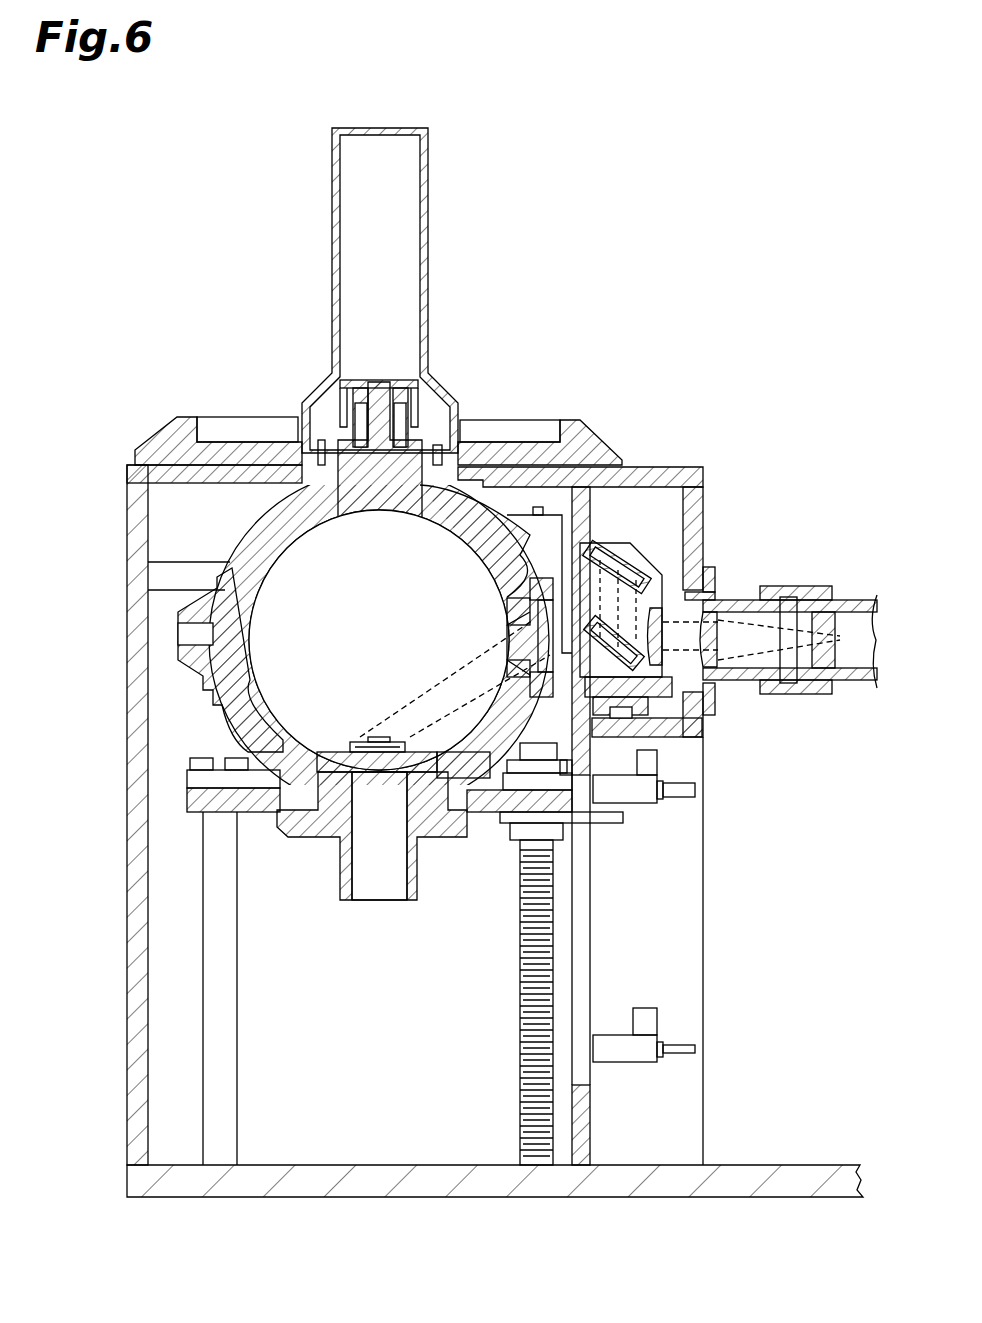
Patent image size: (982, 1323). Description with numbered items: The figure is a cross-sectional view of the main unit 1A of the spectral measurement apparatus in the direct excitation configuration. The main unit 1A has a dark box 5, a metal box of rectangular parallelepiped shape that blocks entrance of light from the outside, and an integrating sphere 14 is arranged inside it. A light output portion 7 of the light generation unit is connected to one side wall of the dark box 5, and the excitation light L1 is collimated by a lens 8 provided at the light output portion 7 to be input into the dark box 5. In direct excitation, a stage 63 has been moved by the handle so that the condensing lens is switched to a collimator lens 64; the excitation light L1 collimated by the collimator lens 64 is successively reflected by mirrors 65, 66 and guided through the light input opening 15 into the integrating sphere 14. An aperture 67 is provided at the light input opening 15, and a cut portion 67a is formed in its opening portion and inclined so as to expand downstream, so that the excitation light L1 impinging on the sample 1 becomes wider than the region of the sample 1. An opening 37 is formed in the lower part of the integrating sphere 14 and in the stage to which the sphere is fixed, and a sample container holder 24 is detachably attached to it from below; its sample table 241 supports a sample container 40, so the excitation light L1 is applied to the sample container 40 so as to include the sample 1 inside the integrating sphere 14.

The main unit 1A is at (810, 131).
The dark box 5 is at (125, 940).
The integrating sphere 14 is at (247, 553).
The light input opening 15 is at (503, 597).
The aperture 67 is at (501, 615).
The cut portion 67a is at (510, 650).
The excitation light L1 is at (418, 700).
The sample container 40 is at (365, 726).
The sample 1 is at (383, 735).
The sample table 241 is at (333, 752).
The sample container holder 24 is at (318, 840).
The opening 37 is at (430, 800).
The stage 63 is at (702, 740).
The light output portion 7 is at (725, 692).
The mirror 66 is at (642, 560).
The mirror 65 is at (628, 642).
The lens 8 is at (723, 633).
The collimator lens 64 is at (713, 673).